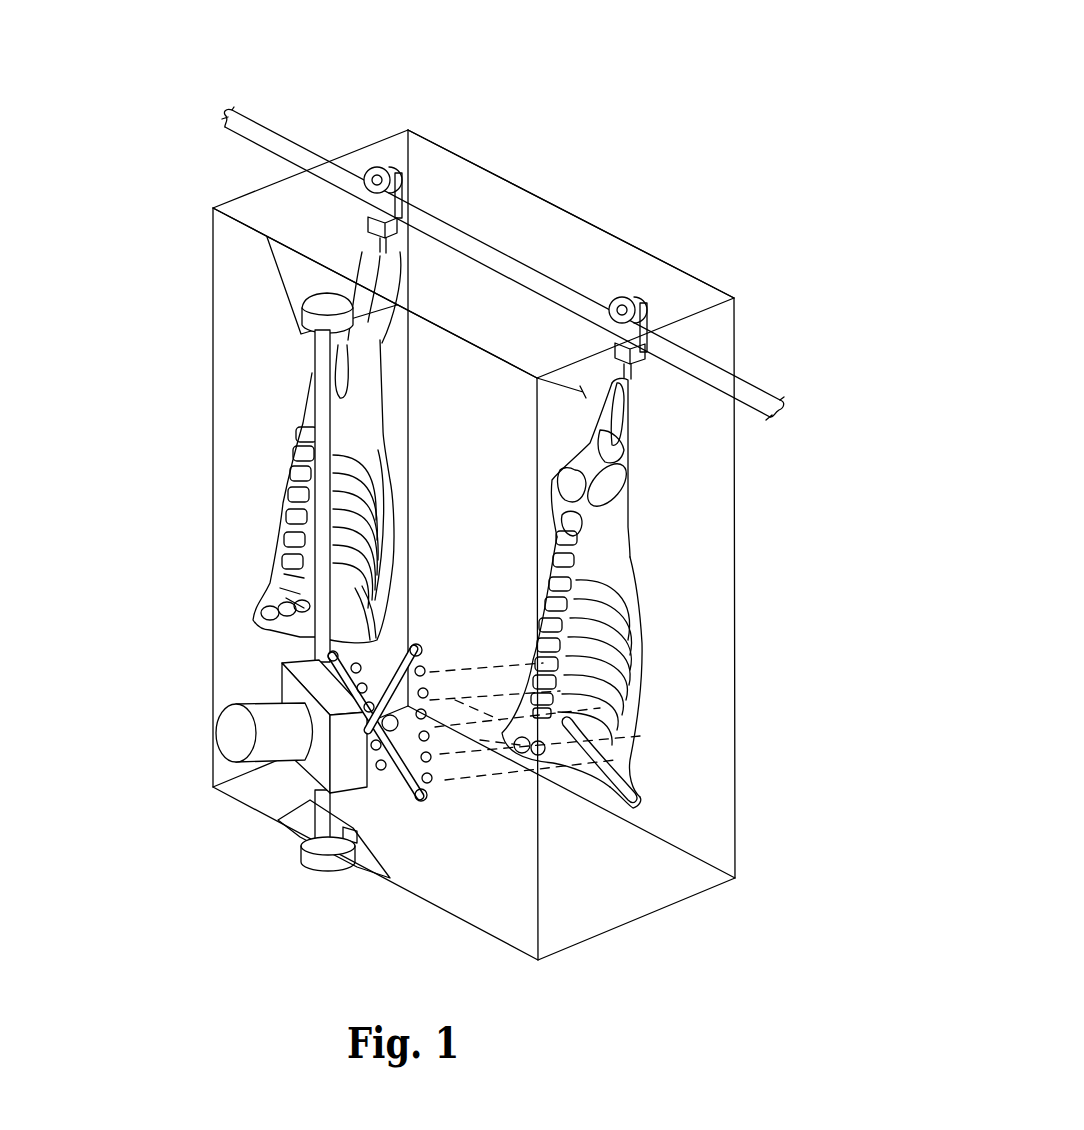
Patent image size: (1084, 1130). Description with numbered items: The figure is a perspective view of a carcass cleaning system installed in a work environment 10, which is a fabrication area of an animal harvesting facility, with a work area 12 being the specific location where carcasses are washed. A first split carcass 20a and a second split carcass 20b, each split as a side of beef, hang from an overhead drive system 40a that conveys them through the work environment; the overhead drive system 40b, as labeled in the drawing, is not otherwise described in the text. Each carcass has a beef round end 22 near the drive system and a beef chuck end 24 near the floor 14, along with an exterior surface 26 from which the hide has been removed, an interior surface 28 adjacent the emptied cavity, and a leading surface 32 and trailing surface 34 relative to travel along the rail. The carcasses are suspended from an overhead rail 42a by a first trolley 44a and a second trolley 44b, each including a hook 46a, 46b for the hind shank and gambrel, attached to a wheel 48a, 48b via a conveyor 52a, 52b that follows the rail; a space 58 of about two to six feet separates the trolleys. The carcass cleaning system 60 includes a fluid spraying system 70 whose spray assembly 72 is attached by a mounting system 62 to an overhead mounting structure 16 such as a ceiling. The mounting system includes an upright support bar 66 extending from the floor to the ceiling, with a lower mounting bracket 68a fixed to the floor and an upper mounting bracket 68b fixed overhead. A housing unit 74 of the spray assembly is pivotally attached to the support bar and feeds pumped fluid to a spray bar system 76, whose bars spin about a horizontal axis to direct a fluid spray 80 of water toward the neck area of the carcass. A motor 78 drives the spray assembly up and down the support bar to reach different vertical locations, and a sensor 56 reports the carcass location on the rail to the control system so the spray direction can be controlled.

The work environment 10 is at (757, 40).
The work area 12 is at (725, 108).
The floor 14 is at (671, 897).
The overhead mounting structure 16 is at (304, 287).
The split carcass 20a is at (697, 603).
The split carcass 20b is at (450, 572).
The beef round end 22 is at (640, 440).
The beef chuck end 24 is at (648, 725).
The exterior surface 26 is at (632, 535).
The interior surface 28 is at (601, 815).
The leading surface 32 is at (555, 532).
The trailing surface 34 is at (642, 627).
The overhead drive system 40a is at (725, 328).
The trolley assembly 40b is at (411, 196).
The overhead rail 42a is at (762, 388).
The first trolley 44a is at (665, 290).
The second trolley 44b is at (430, 163).
The hook 46a is at (637, 392).
The hook 46b is at (390, 255).
The wheel 48a is at (622, 296).
The wheel 48b is at (377, 166).
The conveyor 52a is at (641, 364).
The conveyor 52b is at (399, 232).
The sensor 56 is at (375, 840).
The space 58 is at (478, 340).
The carcass cleaning system 60 is at (105, 655).
The mounting system 62 is at (205, 290).
The upright support bar 66 is at (305, 356).
The lower mounting bracket 68a is at (340, 870).
The upper mounting bracket 68b is at (345, 305).
The fluid spraying system 70 is at (143, 690).
The spray assembly 72 is at (190, 742).
The housing unit 74 is at (355, 793).
The spray bar system 76 is at (430, 632).
The motor 78 is at (253, 702).
The fluid spray 80 is at (474, 792).